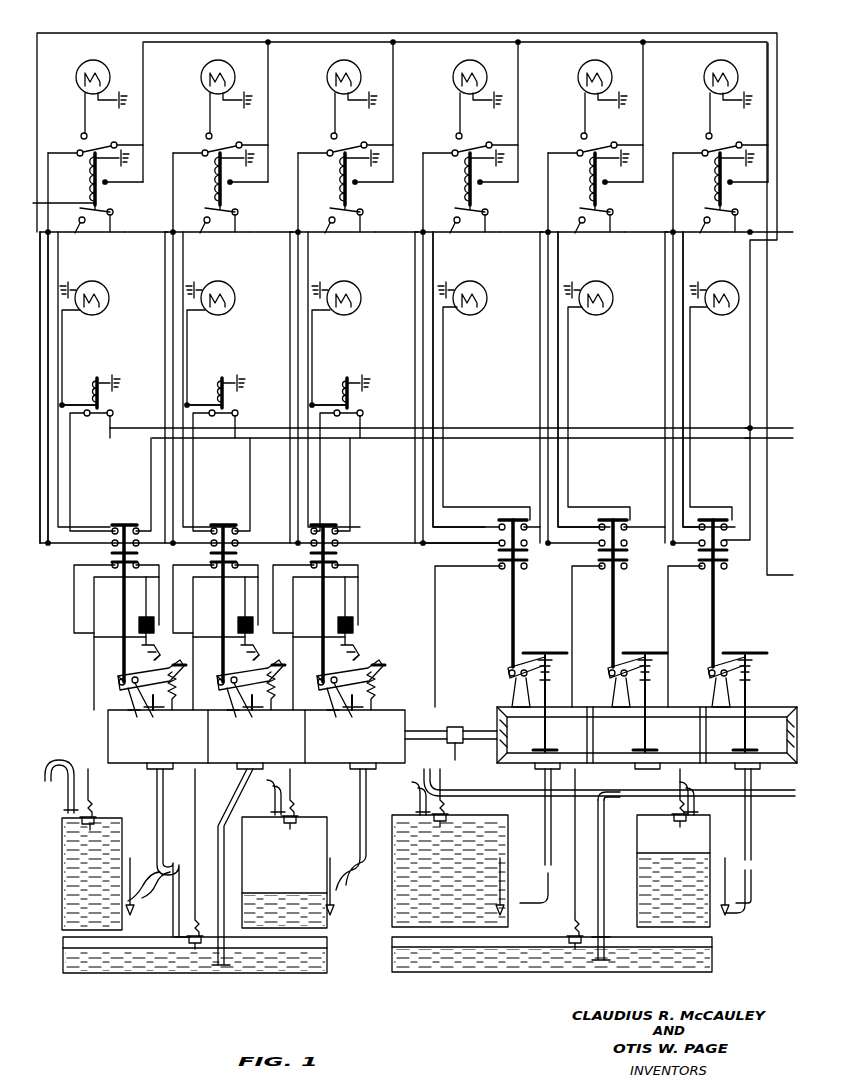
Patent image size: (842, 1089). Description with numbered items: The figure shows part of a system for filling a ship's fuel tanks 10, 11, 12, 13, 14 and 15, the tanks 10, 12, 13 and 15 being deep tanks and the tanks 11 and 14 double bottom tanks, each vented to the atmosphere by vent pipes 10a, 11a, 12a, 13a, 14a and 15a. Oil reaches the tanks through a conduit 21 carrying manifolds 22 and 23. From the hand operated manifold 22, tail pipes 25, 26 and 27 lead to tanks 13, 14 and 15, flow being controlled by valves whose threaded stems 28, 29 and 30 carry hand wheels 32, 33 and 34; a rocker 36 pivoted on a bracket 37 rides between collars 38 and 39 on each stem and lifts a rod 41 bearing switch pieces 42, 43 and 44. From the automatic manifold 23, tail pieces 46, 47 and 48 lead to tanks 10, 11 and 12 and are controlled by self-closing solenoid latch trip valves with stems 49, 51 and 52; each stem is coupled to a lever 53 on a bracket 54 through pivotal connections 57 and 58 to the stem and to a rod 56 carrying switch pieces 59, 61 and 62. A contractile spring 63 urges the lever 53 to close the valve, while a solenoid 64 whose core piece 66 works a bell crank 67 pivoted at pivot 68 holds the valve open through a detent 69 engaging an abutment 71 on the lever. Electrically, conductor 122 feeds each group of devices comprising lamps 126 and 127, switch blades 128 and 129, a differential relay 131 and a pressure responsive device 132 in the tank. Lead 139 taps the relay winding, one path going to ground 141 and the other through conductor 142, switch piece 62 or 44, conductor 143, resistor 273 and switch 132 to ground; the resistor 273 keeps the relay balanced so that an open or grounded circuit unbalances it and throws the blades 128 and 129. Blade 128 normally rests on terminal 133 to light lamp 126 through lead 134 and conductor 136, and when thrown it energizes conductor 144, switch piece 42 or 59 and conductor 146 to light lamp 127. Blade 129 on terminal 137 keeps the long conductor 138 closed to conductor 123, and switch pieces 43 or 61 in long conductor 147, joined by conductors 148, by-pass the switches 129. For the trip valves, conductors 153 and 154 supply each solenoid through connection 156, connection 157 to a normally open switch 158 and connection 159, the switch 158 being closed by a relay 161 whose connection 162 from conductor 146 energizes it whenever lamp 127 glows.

The fuel tank 10 is at (62, 858).
The vent pipe 10a is at (66, 790).
The fuel tank 11 is at (140, 973).
The vent pipe 11a is at (180, 915).
The fuel tank 12 is at (327, 845).
The vent pipe 12a is at (280, 795).
The fuel tank 13 is at (508, 822).
The vent pipe 13a is at (412, 785).
The fuel tank 14 is at (470, 972).
The vent pipe 14a is at (620, 795).
The fuel tank 15 is at (710, 828).
The vent pipe 15a is at (692, 790).
The conduit 21 is at (775, 800).
The manifold 22 is at (510, 768).
The manifold 23 is at (108, 748).
The tail pipe 25 is at (544, 865).
The tail pipe 26 is at (608, 862).
The tail pipe 27 is at (753, 850).
The threaded valve stem 28 is at (561, 703).
The threaded valve stem 29 is at (648, 685).
The threaded valve stem 30 is at (748, 685).
The hand wheel 32 is at (546, 652).
The hand wheel 33 is at (646, 650).
The hand wheel 34 is at (746, 650).
The rocker 36 is at (626, 655).
The bracket 37 is at (607, 692).
The collar 38 is at (665, 663).
The collar 39 is at (667, 680).
The vertically movable rod 41 is at (595, 593).
The switch piece 42 is at (613, 502).
The switch piece 43 is at (628, 558).
The switch piece 44 is at (625, 552).
The tail piece 46 is at (155, 798).
The tail piece 47 is at (236, 798).
The tail piece 48 is at (360, 790).
The trip valve stem 49 is at (153, 708).
The trip valve stem 51 is at (252, 708).
The trip valve stem 52 is at (352, 708).
The lever 53 is at (186, 680).
The bracket 54 is at (132, 712).
The vertically movable rod 56 is at (121, 612).
The pivotal connection 57 is at (130, 688).
The pivotal connection 58 is at (120, 678).
The switch piece 59 is at (125, 522).
The switch piece 61 is at (111, 554).
The switch piece 62 is at (121, 582).
The contractile spring 63 is at (175, 705).
The solenoid 64 is at (146, 615).
The core piece 66 is at (140, 639).
The bell crank 67 is at (152, 636).
The pivot 68 is at (155, 648).
The detent 69 is at (158, 658).
The abutment 71 is at (160, 670).
The conductor 122 is at (447, 42).
The conductor 123 is at (604, 33).
The signal lamp bulb 126 is at (205, 68).
The signal lamp bulb 127 is at (415, 312).
The switch blade 128 is at (409, 132).
The switch blade 129 is at (412, 231).
The differential relay 131 is at (386, 179).
The pressure responsive device 132 is at (96, 816).
The terminal 133 is at (378, 124).
The lead 134 is at (457, 126).
The conductor 136 is at (377, 113).
The terminal 137 is at (382, 237).
The long conductor 138 is at (405, 251).
The conductor 139 is at (437, 195).
The ground 141 is at (446, 160).
The conductor 142 is at (48, 370).
The conductor 143 is at (93, 703).
The conductor 144 is at (48, 194).
The conductor 146 is at (445, 365).
The long conductor 147 is at (58, 545).
The conductor 148 is at (40, 280).
The conductor 153 is at (745, 418).
The conductor 154 is at (745, 440).
The connection 156 is at (150, 468).
The connection 157 is at (71, 493).
The normally open switch 158 is at (234, 443).
The connection 159 is at (239, 418).
The relay 161 is at (228, 391).
The connection 162 is at (204, 385).
The resistor 273 is at (386, 849).